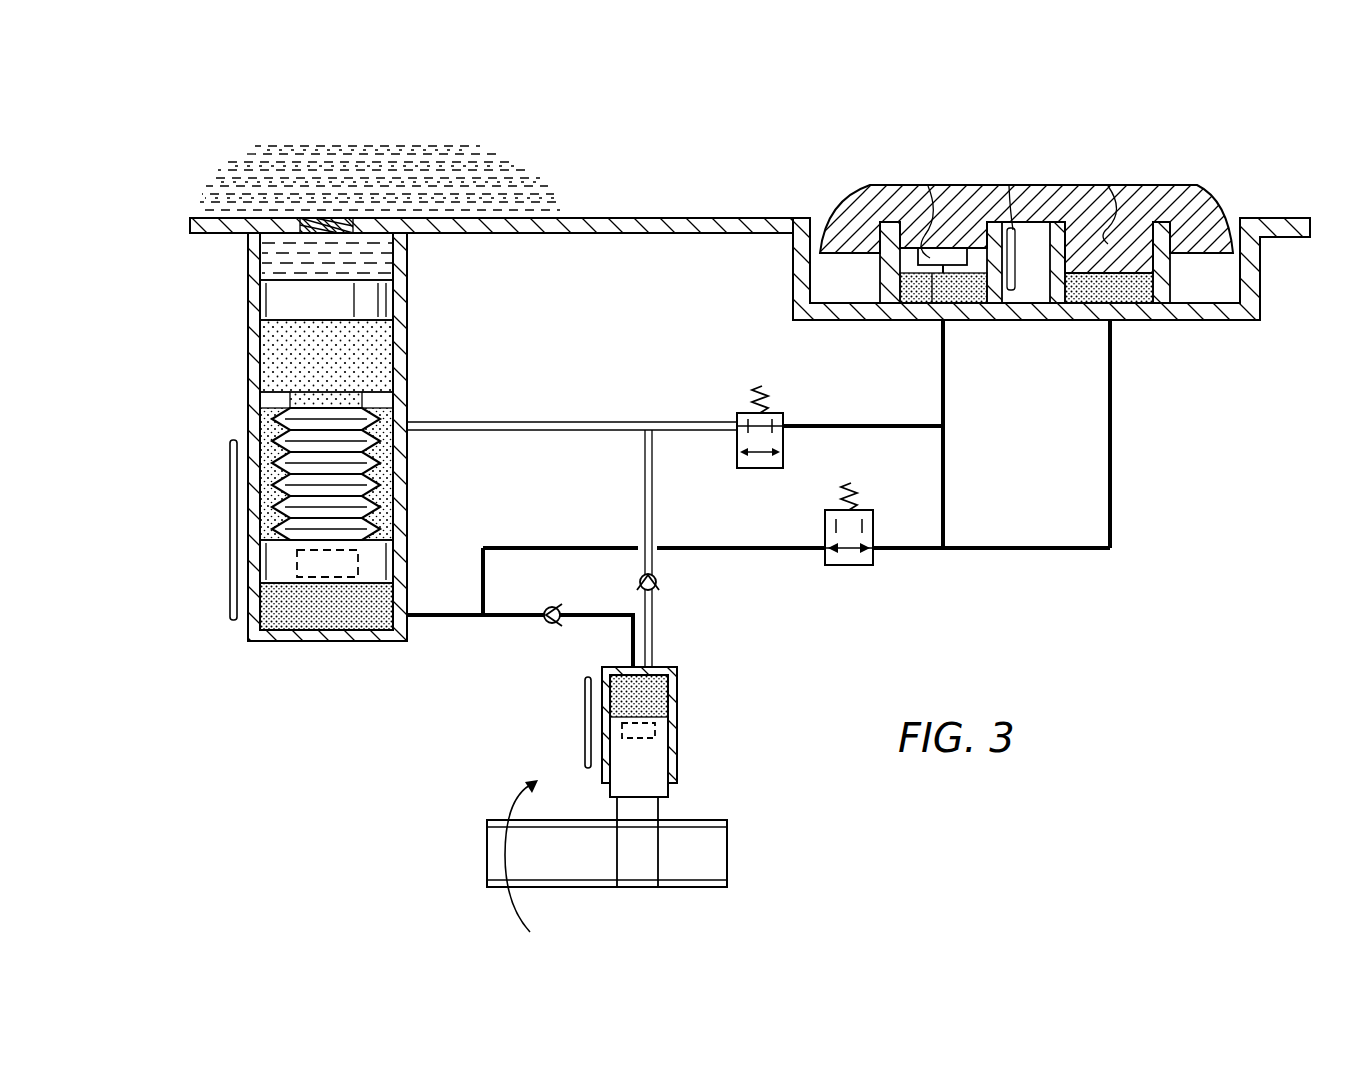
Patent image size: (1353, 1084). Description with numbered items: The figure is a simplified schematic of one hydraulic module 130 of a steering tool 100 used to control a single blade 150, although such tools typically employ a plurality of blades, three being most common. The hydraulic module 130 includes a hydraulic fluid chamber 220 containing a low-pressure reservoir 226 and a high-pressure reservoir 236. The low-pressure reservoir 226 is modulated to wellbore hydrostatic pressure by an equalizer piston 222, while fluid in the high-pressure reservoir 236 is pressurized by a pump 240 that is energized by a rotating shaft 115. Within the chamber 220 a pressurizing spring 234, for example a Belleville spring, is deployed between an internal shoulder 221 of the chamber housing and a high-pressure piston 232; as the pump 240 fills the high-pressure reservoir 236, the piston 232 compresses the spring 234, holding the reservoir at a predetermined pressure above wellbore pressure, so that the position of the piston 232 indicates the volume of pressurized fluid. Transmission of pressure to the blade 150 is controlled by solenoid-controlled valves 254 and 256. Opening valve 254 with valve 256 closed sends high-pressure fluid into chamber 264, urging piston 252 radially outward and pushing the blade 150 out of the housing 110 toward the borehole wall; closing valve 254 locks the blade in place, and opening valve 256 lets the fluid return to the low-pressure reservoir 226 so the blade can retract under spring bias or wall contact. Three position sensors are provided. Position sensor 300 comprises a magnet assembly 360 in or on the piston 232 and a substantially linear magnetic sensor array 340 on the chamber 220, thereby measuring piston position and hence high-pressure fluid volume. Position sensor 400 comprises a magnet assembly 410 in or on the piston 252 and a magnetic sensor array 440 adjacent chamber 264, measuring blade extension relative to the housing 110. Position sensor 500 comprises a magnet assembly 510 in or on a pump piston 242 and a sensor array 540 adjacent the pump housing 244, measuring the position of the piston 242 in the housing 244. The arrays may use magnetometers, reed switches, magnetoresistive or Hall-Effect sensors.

The cleaning system 100 is at (786, 152).
The housing 110 is at (610, 217).
The rotating shaft 115 is at (686, 888).
The hydraulic module 130 is at (927, 595).
The blade 150 is at (1150, 186).
The hydraulic fluid chamber 220 is at (220, 344).
The internal shoulder 221 is at (272, 380).
The equalizer piston 222 is at (272, 258).
The low-pressure reservoir 226 is at (388, 372).
The high-pressure piston 232 is at (275, 566).
The pressurizing spring 234 is at (275, 490).
The high-pressure reservoir 236 is at (330, 634).
The pump 240 is at (695, 703).
The piston 242 is at (650, 778).
The pump housing 244 is at (665, 667).
The piston 252 is at (928, 186).
The solenoid-controlled valve 254 is at (849, 566).
The solenoid-controlled valve 256 is at (759, 470).
The chamber 264 is at (898, 278).
The position sensor 300 is at (203, 602).
The magnetic sensor array 340 is at (230, 462).
The magnet assembly 360 is at (360, 571).
The position sensor 400 is at (972, 290).
The magnet assembly 410 is at (918, 312).
The magnetic sensor array 440 is at (1009, 186).
The position sensor 500 is at (552, 738).
The magnet assembly 510 is at (648, 738).
The sensor array 540 is at (586, 718).